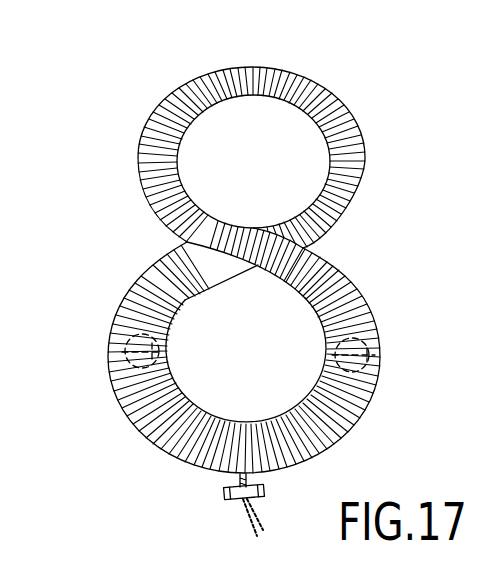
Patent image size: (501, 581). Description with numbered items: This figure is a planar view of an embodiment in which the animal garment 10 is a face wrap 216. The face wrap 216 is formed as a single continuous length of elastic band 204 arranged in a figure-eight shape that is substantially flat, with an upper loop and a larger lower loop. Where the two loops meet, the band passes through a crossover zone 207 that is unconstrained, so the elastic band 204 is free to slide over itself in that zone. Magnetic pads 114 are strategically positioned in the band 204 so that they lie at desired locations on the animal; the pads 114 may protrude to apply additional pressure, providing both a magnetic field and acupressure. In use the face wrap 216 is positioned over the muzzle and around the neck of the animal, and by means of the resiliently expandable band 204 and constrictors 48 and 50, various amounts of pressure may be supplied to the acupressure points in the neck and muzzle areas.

The animal garment 10 is at (170, 86).
The face wrap 216 is at (327, 90).
The constrictor 48 is at (377, 325).
The elastic band 204 is at (340, 222).
The crossover zone 207 is at (165, 238).
The magnetic pads 114 is at (112, 338).
The constrictor 50 is at (238, 502).